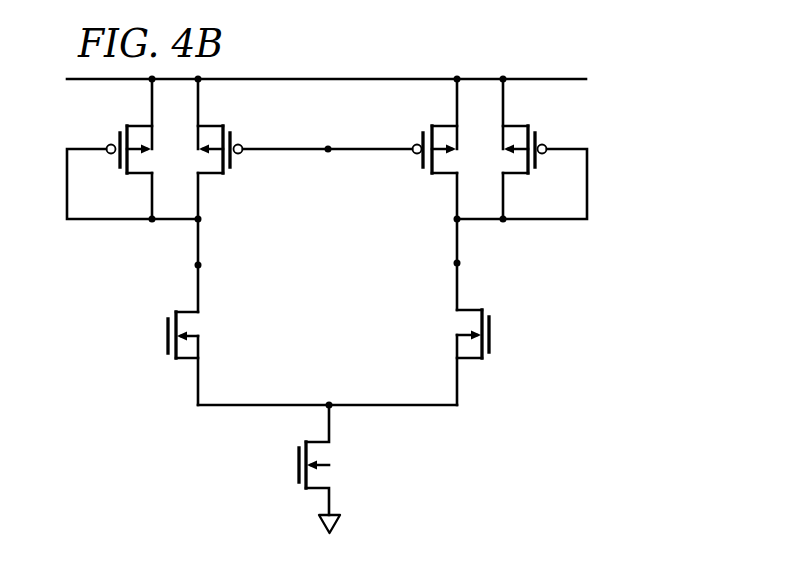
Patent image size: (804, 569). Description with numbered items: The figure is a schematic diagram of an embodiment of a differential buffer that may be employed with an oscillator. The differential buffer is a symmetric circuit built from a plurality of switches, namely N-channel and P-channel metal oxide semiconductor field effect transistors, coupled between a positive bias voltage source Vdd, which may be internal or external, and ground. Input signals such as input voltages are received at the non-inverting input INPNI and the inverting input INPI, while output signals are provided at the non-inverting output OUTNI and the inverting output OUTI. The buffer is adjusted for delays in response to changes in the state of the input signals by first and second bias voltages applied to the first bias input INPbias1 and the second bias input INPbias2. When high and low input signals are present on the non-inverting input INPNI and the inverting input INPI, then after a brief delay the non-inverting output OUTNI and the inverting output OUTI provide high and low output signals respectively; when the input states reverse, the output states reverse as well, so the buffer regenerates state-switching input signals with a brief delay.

The positive bias voltage source Vdd is at (326, 62).
The second bias input INPbias2 is at (328, 149).
The inverting output OUTI is at (198, 265).
The non-inverting output OUTNI is at (457, 263).
The non-inverting input INPNI is at (168, 336).
The inverting input INPI is at (489, 335).
The first bias input INPbias1 is at (299, 465).